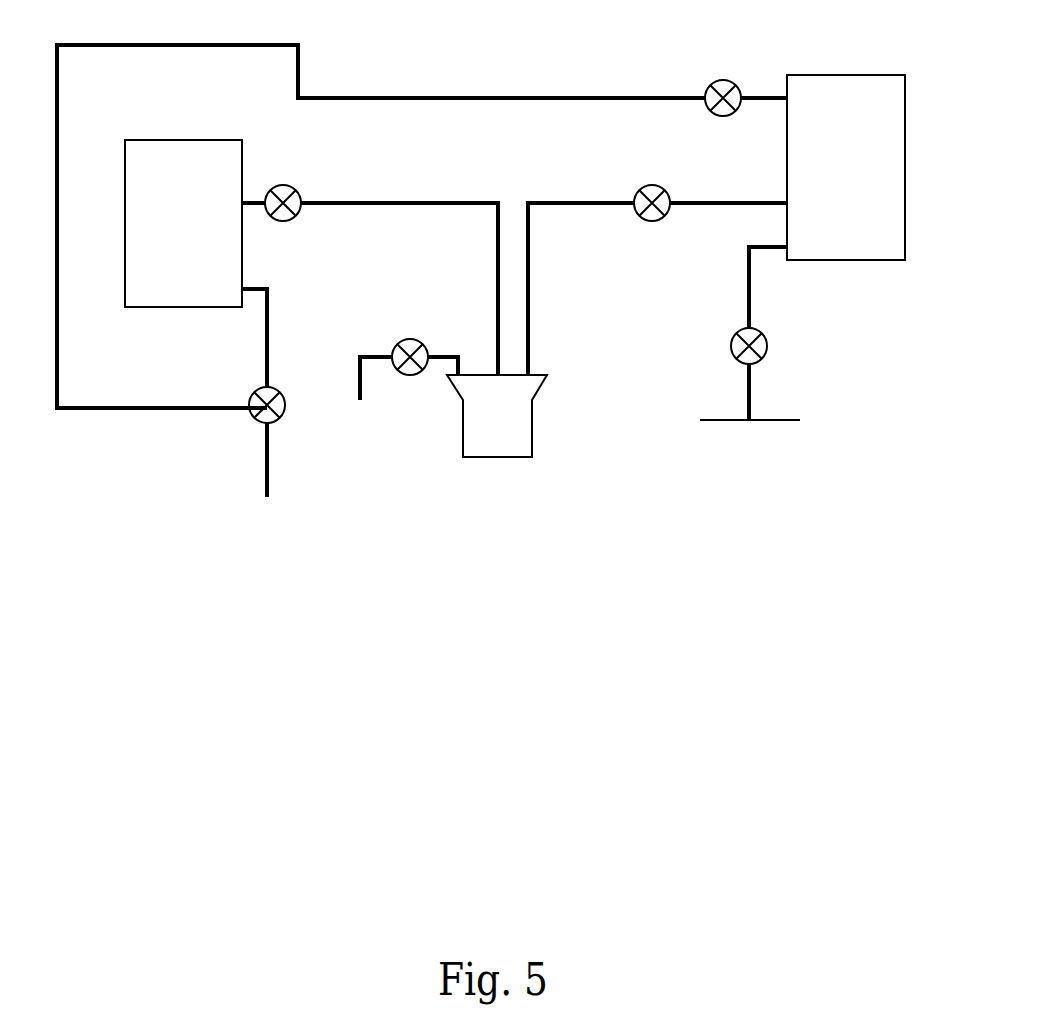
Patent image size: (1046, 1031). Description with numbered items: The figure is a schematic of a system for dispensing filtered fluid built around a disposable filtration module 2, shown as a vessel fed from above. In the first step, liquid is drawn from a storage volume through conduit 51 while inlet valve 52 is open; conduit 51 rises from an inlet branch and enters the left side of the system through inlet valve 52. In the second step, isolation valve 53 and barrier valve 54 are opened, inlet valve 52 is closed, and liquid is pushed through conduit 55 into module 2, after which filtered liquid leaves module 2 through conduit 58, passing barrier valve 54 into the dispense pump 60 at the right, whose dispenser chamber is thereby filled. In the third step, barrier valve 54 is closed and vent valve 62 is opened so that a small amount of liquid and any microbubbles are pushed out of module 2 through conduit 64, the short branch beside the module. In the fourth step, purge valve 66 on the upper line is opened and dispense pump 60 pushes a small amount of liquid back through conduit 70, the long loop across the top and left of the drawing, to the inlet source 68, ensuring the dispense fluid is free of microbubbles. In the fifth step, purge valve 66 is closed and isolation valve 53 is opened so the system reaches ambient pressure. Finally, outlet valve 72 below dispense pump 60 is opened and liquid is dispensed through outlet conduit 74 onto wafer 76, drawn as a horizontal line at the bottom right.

The disposable filtration module 2 is at (517, 428).
The conduit 51 is at (268, 366).
The inlet valve 52 is at (281, 405).
The isolation valve 53 is at (294, 198).
The barrier valve 54 is at (656, 187).
The conduit 55 is at (408, 202).
The conduit 58 is at (176, 288).
The dispense pump 60 is at (835, 90).
The vent valve 62 is at (411, 339).
The conduit 64 is at (362, 384).
The purge valve 66 is at (727, 85).
The inlet source 68 is at (268, 488).
The conduit 70 is at (167, 410).
The outlet valve 72 is at (767, 346).
The outlet conduit 74 is at (752, 395).
The wafer 76 is at (775, 421).